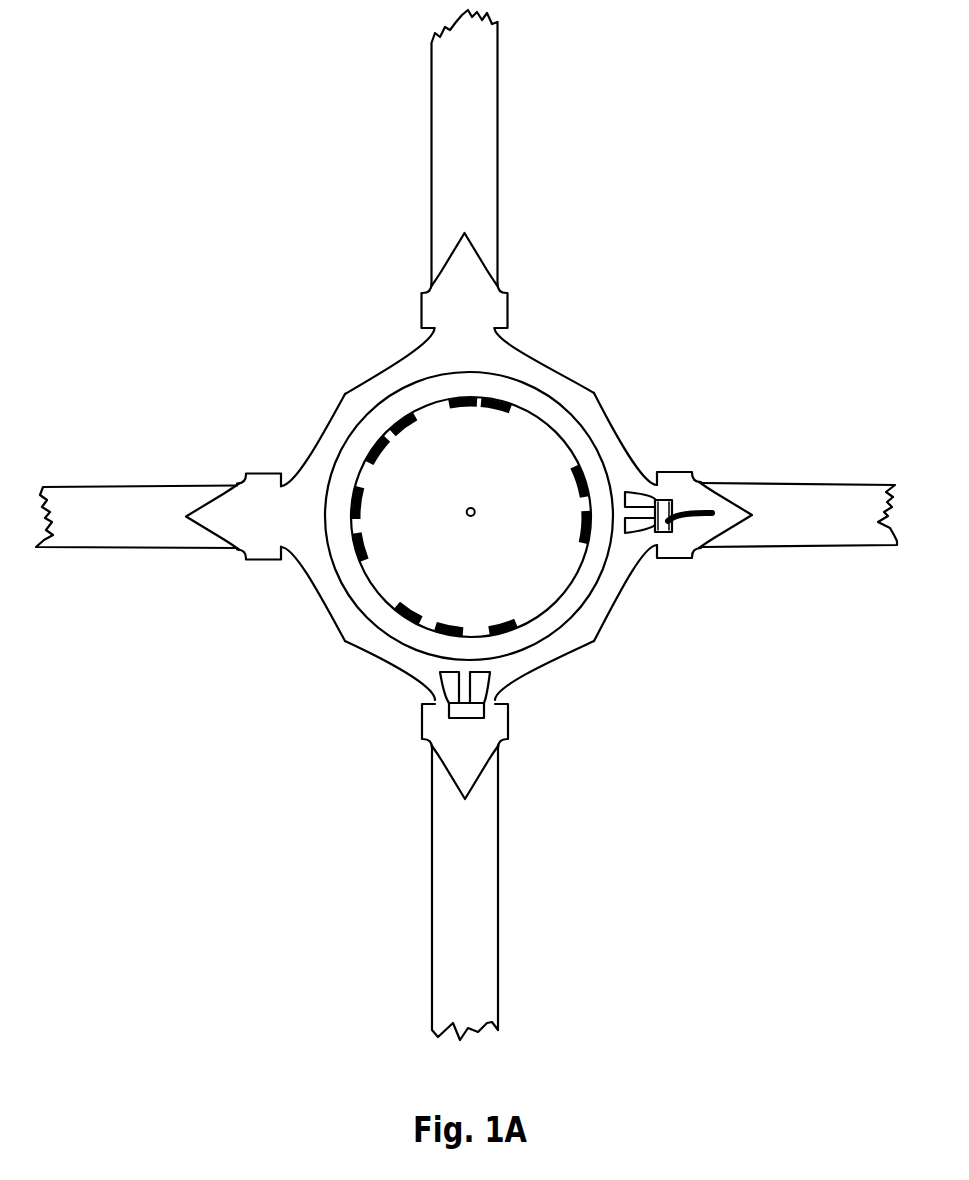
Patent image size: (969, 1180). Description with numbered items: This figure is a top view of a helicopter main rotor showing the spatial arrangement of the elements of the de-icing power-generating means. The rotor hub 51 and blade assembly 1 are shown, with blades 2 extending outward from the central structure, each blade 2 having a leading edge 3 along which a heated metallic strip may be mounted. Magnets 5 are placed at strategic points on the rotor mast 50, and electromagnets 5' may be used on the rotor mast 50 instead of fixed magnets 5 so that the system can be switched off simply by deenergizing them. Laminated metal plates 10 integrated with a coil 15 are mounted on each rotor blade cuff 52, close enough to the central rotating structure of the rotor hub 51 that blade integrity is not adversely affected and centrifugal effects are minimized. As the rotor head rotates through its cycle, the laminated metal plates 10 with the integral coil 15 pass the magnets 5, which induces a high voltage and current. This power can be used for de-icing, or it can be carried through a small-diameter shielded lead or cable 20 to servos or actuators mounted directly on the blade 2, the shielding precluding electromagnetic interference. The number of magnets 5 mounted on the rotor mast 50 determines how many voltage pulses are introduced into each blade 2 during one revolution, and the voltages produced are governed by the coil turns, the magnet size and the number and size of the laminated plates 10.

The blade assembly 1 is at (466, 525).
The blade 2 is at (90, 524).
The leading edge 3 is at (167, 549).
The magnets 5 is at (367, 403).
The electromagnets 5' is at (405, 439).
The laminated metal plates 10 is at (641, 487).
The coil 15 is at (668, 497).
The lead or cable 20 is at (699, 532).
The rotor mast 50 is at (405, 543).
The rotor hub 51 is at (583, 627).
The rotor blade cuff 52 is at (683, 548).